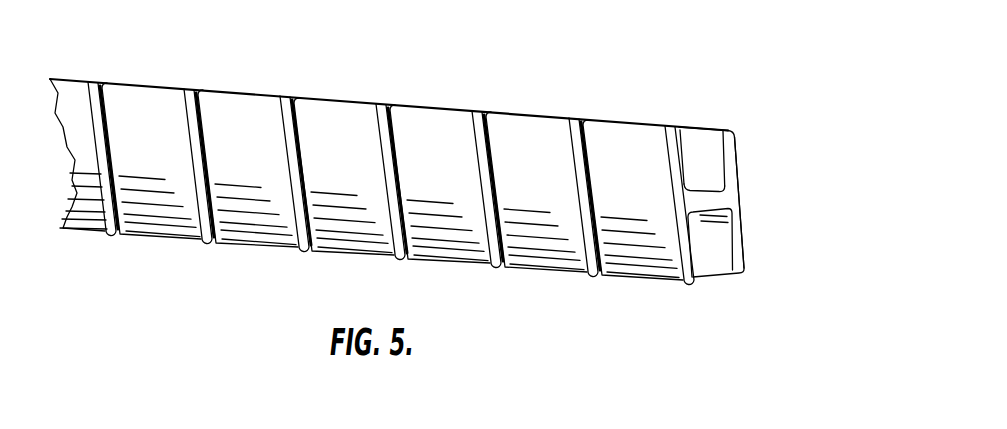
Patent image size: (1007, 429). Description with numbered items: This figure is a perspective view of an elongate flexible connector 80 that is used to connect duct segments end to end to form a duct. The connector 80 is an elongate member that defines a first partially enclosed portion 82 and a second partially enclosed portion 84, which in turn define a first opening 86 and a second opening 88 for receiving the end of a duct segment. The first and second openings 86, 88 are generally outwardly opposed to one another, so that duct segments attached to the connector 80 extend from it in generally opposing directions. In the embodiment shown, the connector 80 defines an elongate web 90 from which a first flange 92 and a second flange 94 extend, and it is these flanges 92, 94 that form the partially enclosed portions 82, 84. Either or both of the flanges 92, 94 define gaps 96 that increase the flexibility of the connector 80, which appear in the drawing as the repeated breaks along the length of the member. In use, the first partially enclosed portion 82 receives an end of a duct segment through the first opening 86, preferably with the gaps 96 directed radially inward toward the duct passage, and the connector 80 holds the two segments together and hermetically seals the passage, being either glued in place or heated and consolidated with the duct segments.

The flexible connector 80 is at (438, 204).
The first partially enclosed portion 82 is at (753, 177).
The second partially enclosed portion 84 is at (743, 243).
The first opening 86 is at (705, 148).
The second opening 88 is at (718, 260).
The elongate web 90 is at (710, 196).
The first flange 92 is at (608, 126).
The second flange 94 is at (695, 128).
The gaps 96 is at (572, 122).